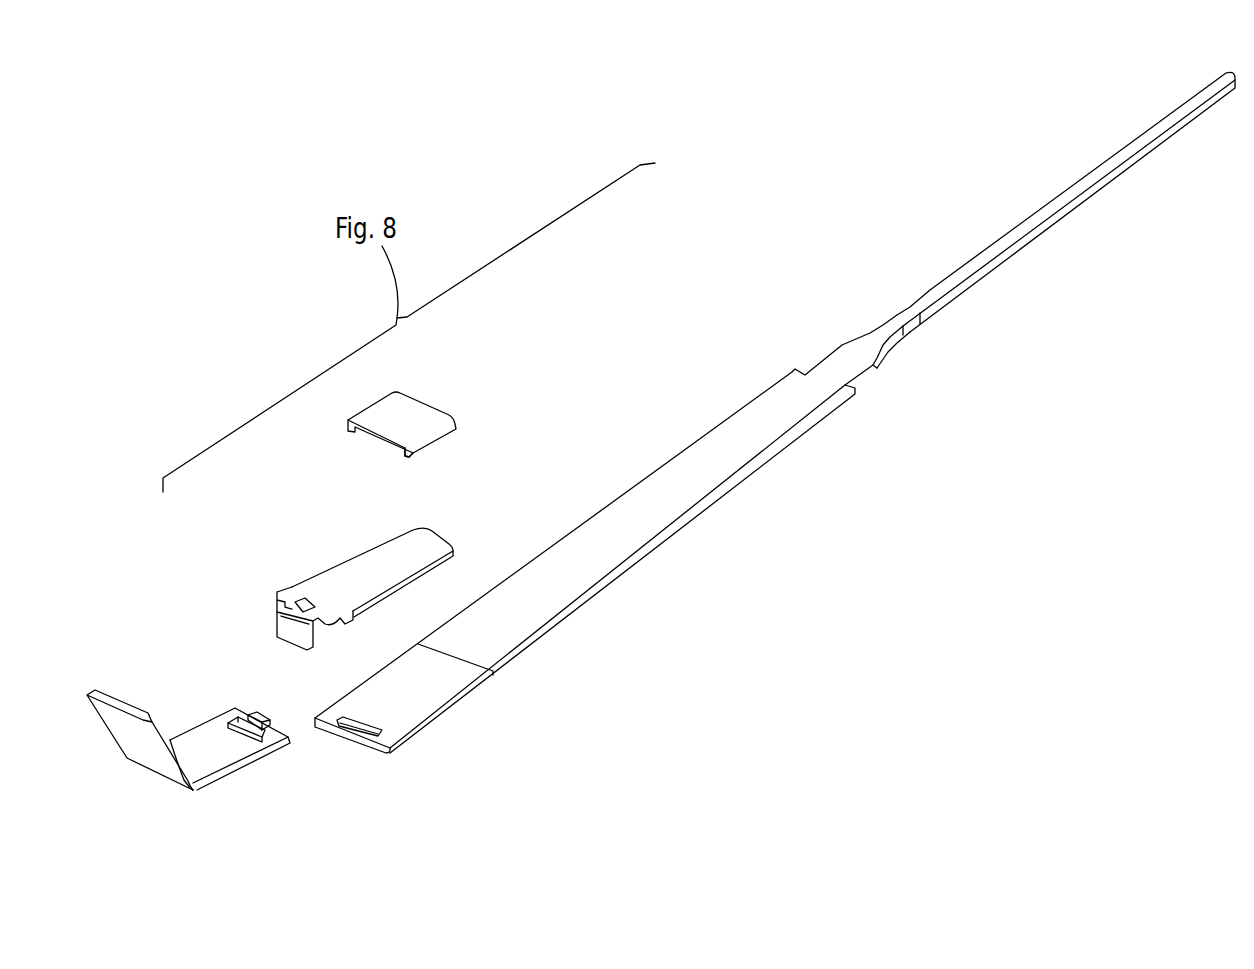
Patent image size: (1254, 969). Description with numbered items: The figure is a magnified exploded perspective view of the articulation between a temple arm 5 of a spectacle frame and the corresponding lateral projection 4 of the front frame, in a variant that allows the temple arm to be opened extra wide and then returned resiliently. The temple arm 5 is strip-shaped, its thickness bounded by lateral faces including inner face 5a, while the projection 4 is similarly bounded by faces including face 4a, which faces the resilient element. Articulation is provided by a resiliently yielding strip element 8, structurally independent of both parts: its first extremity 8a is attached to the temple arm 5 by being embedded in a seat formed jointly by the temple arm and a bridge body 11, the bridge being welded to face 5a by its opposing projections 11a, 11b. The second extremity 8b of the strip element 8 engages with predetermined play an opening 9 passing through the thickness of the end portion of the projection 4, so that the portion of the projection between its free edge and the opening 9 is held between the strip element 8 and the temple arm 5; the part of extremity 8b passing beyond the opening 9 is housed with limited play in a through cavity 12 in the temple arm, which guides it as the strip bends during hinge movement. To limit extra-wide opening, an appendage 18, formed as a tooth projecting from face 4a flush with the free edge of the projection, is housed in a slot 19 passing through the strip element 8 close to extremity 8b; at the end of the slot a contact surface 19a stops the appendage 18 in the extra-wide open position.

The lateral projection 4 is at (172, 788).
The lateral face of the projection 4a is at (227, 757).
The temple arm 5 is at (594, 530).
The inner lateral face of the temple arm 5a is at (453, 688).
The resiliently yielding element 8 is at (343, 566).
The first extremity of the resilient element 8a is at (447, 542).
The second extremity of the resilient element 8b is at (280, 638).
The opening 9 is at (233, 722).
The bridge body 11 is at (416, 414).
The projection of the bridge body 11a is at (408, 459).
The projection of the bridge body 11b is at (348, 432).
The cavity 12 is at (375, 738).
The appendage 18 is at (259, 714).
The slot 19 is at (308, 602).
The contact surface 19a is at (297, 588).